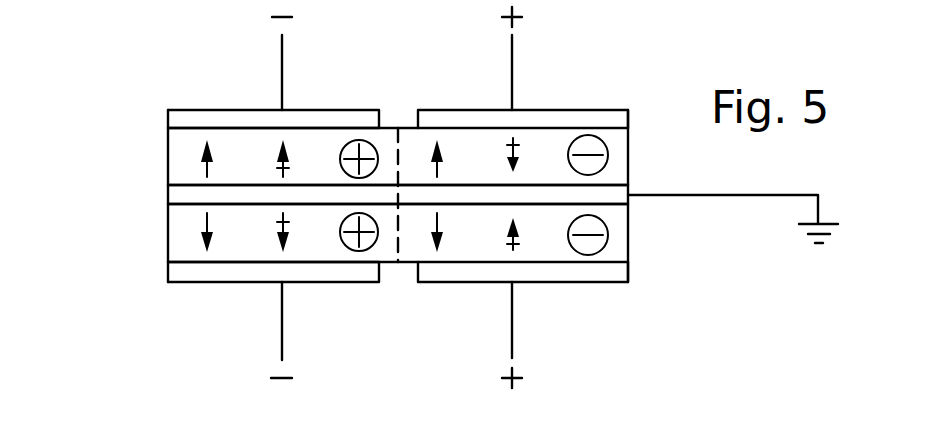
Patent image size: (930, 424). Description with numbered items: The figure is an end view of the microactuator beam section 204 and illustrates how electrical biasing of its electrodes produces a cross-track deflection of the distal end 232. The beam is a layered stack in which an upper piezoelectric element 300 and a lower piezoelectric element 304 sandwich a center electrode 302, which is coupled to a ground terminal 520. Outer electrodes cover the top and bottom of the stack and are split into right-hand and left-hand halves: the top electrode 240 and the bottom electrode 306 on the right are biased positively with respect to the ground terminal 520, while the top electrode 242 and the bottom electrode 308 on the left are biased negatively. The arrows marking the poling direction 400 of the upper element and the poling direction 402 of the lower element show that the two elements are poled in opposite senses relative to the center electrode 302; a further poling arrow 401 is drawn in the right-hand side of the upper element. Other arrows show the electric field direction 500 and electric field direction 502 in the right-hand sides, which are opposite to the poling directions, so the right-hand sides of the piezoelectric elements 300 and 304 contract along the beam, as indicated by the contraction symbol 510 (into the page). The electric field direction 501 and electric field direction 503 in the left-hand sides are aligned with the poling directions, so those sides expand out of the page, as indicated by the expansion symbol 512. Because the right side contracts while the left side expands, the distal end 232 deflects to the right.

The microactuator beam section 204 is at (122, 98).
The distal end 232 is at (645, 250).
The top electrode 240 is at (578, 110).
The top electrode 242 is at (235, 110).
The piezoelectric element 300 is at (168, 170).
The center electrode 302 is at (168, 195).
The piezoelectric element 304 is at (168, 222).
The bottom electrode 306 is at (580, 282).
The bottom electrode 308 is at (207, 282).
The poling direction 400 is at (203, 160).
The polarization direction arrow 401 is at (440, 170).
The poling direction 402 is at (198, 226).
The electric field direction 500 is at (527, 163).
The electric field direction 501 is at (290, 165).
The electric field direction 502 is at (521, 225).
The electric field direction 503 is at (291, 226).
The contraction symbol 510 is at (608, 155).
The expansion symbol 512 is at (382, 147).
The ground terminal 520 is at (723, 195).